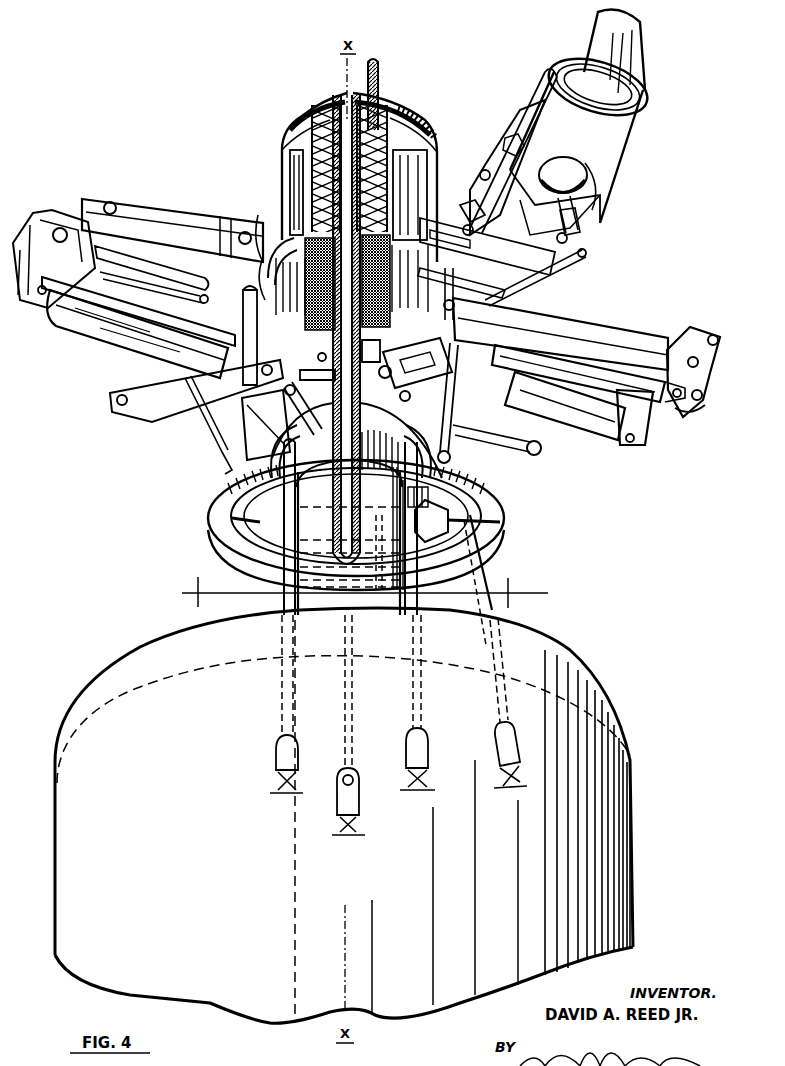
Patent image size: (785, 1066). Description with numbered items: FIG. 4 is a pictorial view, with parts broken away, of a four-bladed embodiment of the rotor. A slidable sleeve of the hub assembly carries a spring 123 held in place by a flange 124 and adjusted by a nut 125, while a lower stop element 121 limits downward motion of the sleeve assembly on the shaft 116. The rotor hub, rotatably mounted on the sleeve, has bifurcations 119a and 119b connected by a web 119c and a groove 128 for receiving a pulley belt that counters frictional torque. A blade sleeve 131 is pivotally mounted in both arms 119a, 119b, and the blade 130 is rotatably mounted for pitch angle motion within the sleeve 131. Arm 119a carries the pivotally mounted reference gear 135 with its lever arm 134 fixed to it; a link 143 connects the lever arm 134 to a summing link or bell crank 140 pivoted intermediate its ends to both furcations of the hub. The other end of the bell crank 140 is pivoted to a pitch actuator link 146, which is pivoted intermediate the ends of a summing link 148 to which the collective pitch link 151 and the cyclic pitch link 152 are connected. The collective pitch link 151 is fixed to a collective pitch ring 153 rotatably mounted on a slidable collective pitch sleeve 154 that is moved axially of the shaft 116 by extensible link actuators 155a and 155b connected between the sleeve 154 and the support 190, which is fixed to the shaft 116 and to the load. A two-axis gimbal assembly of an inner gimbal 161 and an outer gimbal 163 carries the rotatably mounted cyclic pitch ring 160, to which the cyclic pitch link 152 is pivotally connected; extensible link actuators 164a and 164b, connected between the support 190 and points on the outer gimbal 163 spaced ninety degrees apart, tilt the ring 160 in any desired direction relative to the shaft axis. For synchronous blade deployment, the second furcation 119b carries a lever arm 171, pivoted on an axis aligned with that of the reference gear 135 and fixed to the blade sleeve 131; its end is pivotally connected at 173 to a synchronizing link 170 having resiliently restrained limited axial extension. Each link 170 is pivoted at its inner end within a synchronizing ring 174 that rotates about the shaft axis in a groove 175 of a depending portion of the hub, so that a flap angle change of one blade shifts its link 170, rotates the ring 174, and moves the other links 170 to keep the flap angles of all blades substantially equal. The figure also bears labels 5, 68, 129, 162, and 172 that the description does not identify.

The section line 5- 5 is at (208, 576).
The shaft 68 is at (342, 514).
The shaft 116 is at (328, 501).
The bifurcation 119a is at (180, 235).
The bifurcation 119b is at (66, 228).
The web 119c is at (152, 263).
The lower stop element 121 is at (374, 351).
The spring 123 is at (310, 176).
The flange 124 is at (318, 118).
The nut 125 is at (322, 104).
The groove 128 is at (270, 255).
The control rod 129 is at (380, 60).
The blade 130 is at (612, 77).
The blade sleeve 131 is at (598, 150).
The lever arm 134 is at (640, 410).
The reference gear 135 is at (587, 168).
The summing link or bell crank 140 is at (533, 390).
The link 143 is at (540, 282).
The pitch actuator link 146 is at (462, 294).
The summing link 148 is at (417, 373).
The collective pitch link 151 is at (375, 371).
The cyclic pitch link 152 is at (536, 474).
The collective pitch ring 153 is at (266, 373).
The collective pitch sleeve 154 is at (351, 520).
The extensible link actuator 155a is at (280, 717).
The extensible link actuator 155b is at (418, 720).
The cyclic pitch ring 160 is at (500, 524).
The inner gimbal 161 is at (431, 521).
The rod 162 is at (414, 527).
The outer gimbal 163 is at (472, 580).
The extensible link actuator 164a is at (498, 718).
The extensible link actuator 164b is at (350, 720).
The synchronizing link 170 is at (593, 343).
The lever arm 171 is at (690, 385).
The link 172 is at (510, 146).
The pivotal connection 173 is at (704, 397).
The synchronizing ring 174 is at (298, 380).
The groove 175 is at (317, 354).
The support 190 is at (530, 655).